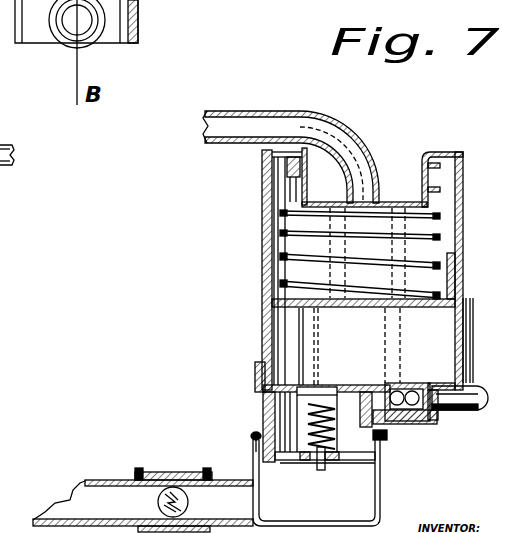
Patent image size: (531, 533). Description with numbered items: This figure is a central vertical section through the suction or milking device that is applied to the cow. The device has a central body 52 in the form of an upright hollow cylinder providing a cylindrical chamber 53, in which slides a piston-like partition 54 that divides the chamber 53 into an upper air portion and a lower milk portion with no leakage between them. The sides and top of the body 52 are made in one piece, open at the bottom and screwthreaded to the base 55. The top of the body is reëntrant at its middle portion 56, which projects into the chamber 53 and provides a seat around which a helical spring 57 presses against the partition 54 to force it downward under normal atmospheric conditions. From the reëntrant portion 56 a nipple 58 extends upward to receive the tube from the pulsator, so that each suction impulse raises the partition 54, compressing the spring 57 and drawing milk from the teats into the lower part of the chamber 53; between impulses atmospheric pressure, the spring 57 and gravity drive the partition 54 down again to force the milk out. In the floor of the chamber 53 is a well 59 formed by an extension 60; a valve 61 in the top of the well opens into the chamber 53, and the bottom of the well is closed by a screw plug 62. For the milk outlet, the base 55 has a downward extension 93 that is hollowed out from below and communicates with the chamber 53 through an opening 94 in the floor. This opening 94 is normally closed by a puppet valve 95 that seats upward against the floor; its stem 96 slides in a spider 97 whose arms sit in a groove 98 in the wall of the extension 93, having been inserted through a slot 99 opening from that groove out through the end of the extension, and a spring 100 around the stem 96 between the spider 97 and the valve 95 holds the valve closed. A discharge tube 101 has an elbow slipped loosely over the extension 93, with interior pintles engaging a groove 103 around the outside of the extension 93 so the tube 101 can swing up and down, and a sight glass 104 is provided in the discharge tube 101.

The central body 52 is at (464, 216).
The cylindrical chamber 53 is at (285, 325).
The piston-like partition 54 is at (438, 302).
The base 55 is at (275, 410).
The reëntrant middle portion 56 is at (393, 183).
The helical spring 57 is at (283, 206).
The nipple 58 is at (323, 127).
The well 59 is at (421, 432).
The extension 60 is at (463, 414).
The valve 61 is at (418, 383).
The screw plug 62 is at (440, 430).
The downward extension 93 is at (283, 433).
The opening 94 is at (322, 385).
The puppet valve 95 is at (262, 392).
The stem 96 is at (330, 470).
The spider 97 is at (345, 457).
The groove 98 is at (376, 457).
The slot 99 is at (325, 462).
The spring 100 is at (300, 419).
The discharge tube 101 is at (72, 38).
The groove 103 is at (397, 437).
The sight glass 104 is at (173, 478).